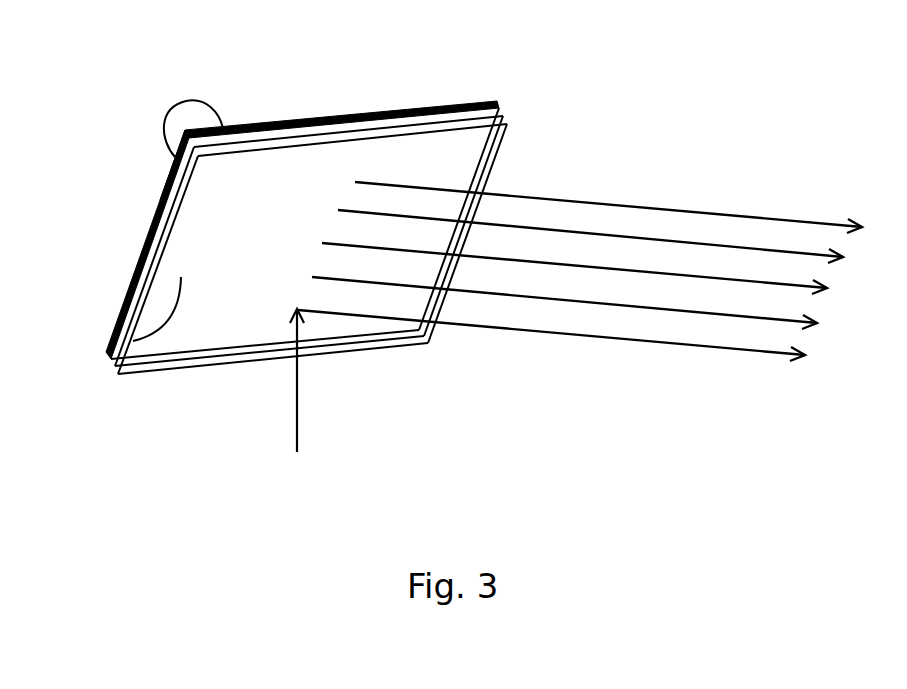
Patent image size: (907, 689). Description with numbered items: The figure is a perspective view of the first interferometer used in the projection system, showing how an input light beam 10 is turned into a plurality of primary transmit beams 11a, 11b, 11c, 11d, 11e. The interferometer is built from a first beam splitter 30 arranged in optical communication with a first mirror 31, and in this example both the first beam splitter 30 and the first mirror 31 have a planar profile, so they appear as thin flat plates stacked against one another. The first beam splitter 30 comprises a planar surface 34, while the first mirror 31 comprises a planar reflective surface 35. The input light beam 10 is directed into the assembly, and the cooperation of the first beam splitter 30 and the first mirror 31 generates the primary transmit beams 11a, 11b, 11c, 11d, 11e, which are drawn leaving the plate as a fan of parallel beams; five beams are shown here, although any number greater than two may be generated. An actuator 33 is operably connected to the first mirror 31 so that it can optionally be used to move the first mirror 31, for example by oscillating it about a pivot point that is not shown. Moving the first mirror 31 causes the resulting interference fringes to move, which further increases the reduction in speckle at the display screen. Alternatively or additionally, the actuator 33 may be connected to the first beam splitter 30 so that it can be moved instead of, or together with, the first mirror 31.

The input light beam 10 is at (298, 430).
The primary transmit beam 11a is at (745, 249).
The primary transmit beam 11b is at (720, 278).
The primary transmit beam 11c is at (707, 313).
The primary transmit beam 11d is at (703, 345).
The primary transmit beam 11e is at (703, 345).
The first beam splitter 30 is at (498, 152).
The first mirror 31 is at (358, 115).
The actuator 33 is at (181, 108).
The planar surface 34 is at (110, 339).
The planar reflective surface 35 is at (170, 173).